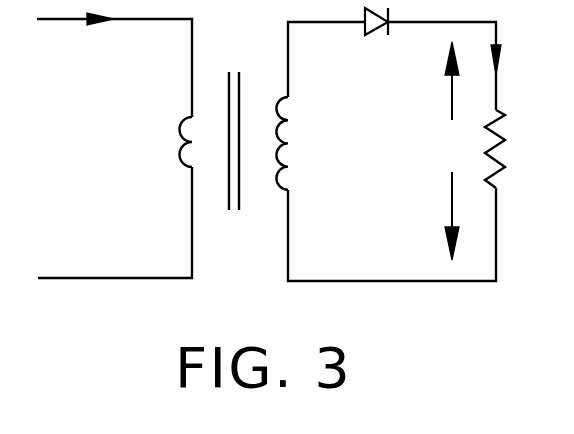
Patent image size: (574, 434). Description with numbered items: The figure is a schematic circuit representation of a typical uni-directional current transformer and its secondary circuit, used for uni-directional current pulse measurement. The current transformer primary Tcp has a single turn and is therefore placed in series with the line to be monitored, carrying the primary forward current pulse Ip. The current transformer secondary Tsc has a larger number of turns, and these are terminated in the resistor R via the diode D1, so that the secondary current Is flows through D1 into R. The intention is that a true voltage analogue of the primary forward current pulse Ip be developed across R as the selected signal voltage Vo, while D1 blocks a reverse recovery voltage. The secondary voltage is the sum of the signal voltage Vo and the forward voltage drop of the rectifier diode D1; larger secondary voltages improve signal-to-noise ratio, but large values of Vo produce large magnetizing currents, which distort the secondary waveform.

The current transformer primary Tcp is at (179, 131).
The current transformer secondary Tsc is at (276, 134).
The diode D1 is at (375, 39).
The resistor R is at (507, 149).
The primary forward current pulse Ip is at (99, 35).
The secondary current Is is at (509, 60).
The signal voltage Vo is at (453, 151).